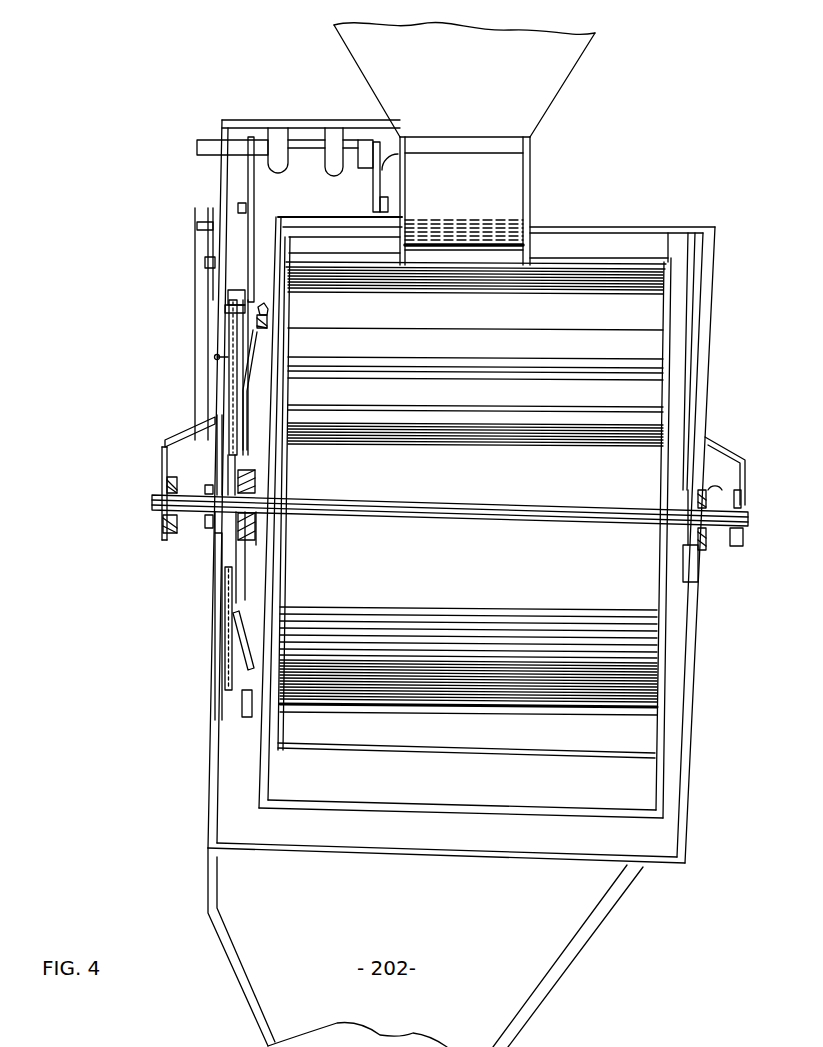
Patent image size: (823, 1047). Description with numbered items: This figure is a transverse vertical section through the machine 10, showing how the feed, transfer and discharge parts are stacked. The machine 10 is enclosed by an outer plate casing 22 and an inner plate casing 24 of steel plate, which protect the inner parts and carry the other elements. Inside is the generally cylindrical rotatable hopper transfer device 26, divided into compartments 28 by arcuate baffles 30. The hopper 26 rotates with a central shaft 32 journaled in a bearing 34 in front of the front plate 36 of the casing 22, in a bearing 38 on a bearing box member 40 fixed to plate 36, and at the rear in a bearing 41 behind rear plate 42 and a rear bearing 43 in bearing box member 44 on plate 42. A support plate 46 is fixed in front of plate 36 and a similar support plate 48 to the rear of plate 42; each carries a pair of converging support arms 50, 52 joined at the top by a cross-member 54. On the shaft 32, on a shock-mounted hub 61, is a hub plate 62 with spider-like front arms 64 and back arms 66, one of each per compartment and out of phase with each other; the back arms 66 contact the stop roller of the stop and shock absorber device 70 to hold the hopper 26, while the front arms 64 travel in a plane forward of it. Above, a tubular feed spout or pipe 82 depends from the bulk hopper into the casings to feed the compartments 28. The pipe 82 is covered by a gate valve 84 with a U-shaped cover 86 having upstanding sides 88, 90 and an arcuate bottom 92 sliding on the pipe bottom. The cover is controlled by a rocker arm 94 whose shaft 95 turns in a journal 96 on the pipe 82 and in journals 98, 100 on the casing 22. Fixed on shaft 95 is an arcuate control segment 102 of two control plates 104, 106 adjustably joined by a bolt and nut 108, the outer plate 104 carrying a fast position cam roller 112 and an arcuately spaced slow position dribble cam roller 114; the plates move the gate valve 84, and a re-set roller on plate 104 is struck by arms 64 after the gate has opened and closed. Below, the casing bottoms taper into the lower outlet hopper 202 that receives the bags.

The machine 10 is at (672, 228).
The outer plate casing 22 is at (566, 229).
The inner plate casing 24 is at (549, 268).
The rotatable hopper transfer device 26 is at (328, 555).
The compartments 28 is at (500, 331).
The arcuate baffles 30 is at (362, 447).
The central shaft 32 is at (170, 520).
The bearing 34 is at (207, 528).
The front plate 36 is at (218, 578).
The bearing 38 is at (167, 485).
The bearing box member 40 is at (165, 456).
The bearing 41 is at (697, 494).
The rear plate 42 is at (686, 626).
The rear bearing 43 is at (725, 515).
The bearing box member 44 is at (712, 441).
The support plate 46 is at (215, 477).
The support plate 48 is at (699, 567).
The support arm 50 is at (207, 337).
The support arm 52 is at (700, 386).
The cross-member 54 is at (205, 262).
The hub 61 is at (258, 494).
The hub plate 62 is at (244, 437).
The front arms 64 is at (207, 673).
The back arms 66 is at (249, 360).
The stop and shock absorber device 70 is at (266, 320).
The feed spout or pipe 82 is at (510, 143).
The gate valve 84 is at (498, 213).
The U-shaped cover 86 is at (500, 233).
The upstanding side 88 is at (379, 167).
The upstanding side 90 is at (527, 185).
The arcuate bottom 92 is at (464, 109).
The rocker arm 94 is at (373, 183).
The shaft 95 is at (320, 158).
The journal 96 is at (388, 205).
The journal 98 is at (272, 137).
The journal 100 is at (324, 137).
The arcuate control segment 102 is at (245, 178).
The arcuate control plate 104 is at (248, 187).
The arcuate control plate 106 is at (246, 208).
The bolt and nut 108 is at (238, 204).
The fast position cam roller 112 is at (238, 297).
The slow position dribble cam roller 114 is at (232, 307).
The lower outlet hopper 202 is at (425, 947).